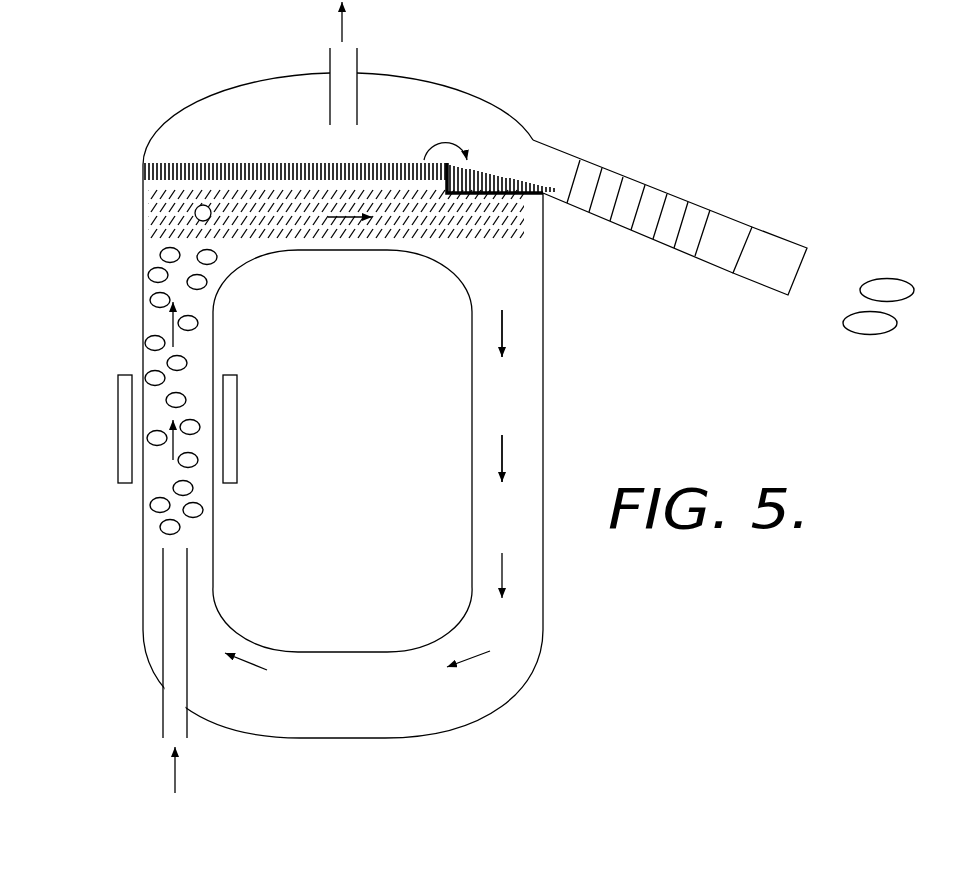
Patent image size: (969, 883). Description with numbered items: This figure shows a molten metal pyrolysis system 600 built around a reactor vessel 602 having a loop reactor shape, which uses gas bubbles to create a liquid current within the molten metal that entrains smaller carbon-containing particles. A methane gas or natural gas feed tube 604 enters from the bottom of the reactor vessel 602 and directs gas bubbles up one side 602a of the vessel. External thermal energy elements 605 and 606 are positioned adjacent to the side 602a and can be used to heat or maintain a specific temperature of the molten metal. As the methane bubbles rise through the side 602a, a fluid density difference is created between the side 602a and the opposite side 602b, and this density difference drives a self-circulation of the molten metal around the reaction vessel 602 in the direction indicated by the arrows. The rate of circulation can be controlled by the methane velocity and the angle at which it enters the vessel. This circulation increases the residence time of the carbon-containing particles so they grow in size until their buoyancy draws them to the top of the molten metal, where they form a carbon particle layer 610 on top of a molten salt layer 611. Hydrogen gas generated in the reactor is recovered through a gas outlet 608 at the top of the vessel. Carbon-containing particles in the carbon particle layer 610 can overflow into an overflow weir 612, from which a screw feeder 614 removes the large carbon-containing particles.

The system 600 is at (87, 128).
The reactor vessel 602 is at (543, 418).
The side of the reactor vessel 602a is at (143, 558).
The side of the reactor vessel 602b is at (543, 332).
The methane gas or natural gas feed tube 604 is at (163, 705).
The external thermal energy element 605 is at (118, 425).
The external thermal energy element 606 is at (237, 428).
The gas outlet 608 is at (357, 63).
The carbon particle layer 610 is at (207, 163).
The molten salt layer 611 is at (143, 218).
The overflow weir 612 is at (455, 178).
The screw feeder 614 is at (653, 189).